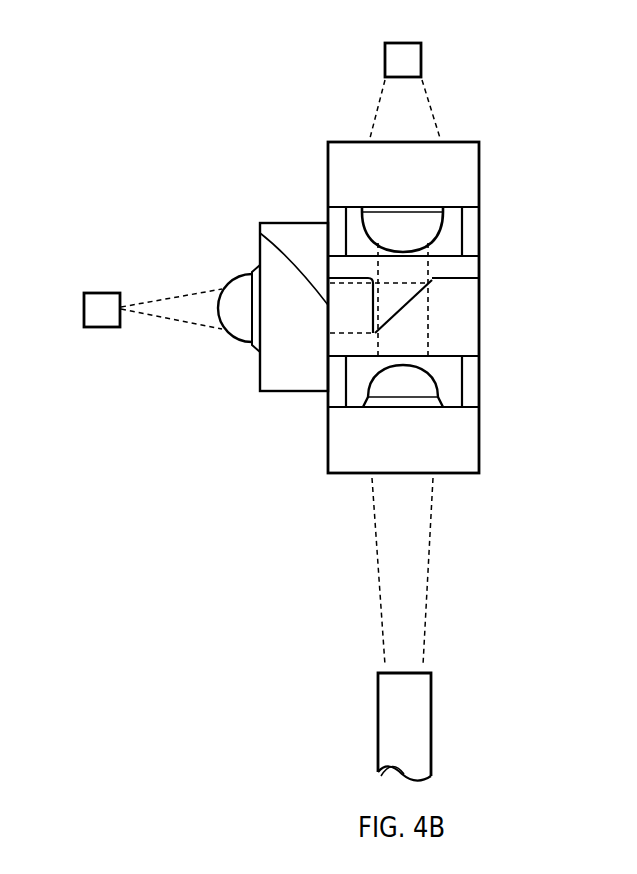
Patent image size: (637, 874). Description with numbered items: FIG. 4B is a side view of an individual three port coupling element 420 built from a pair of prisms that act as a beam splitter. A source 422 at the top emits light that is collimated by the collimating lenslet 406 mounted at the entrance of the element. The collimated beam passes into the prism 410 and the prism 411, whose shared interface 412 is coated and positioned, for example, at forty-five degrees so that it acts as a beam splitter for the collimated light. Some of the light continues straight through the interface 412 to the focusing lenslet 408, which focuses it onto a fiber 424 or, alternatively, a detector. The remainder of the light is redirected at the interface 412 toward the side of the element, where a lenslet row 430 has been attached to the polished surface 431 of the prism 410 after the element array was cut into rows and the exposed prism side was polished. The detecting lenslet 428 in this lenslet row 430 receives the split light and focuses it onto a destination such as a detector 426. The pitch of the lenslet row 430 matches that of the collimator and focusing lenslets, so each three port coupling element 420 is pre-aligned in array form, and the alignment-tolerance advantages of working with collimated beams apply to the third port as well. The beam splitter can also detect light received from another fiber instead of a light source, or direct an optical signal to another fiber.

The collimating lenslet 406 is at (413, 228).
The focusing lenslet 408 is at (412, 385).
The prism array 410 is at (415, 267).
The prism array 411 is at (450, 323).
The interface 412 is at (406, 303).
The optical assembly 420 is at (297, 477).
The source 422 is at (422, 57).
The fiber 424 is at (431, 727).
The detector 426 is at (82, 310).
The detecting lenslet 428 is at (235, 296).
The lenslet row 430 is at (293, 223).
The polished surface 431 is at (260, 233).